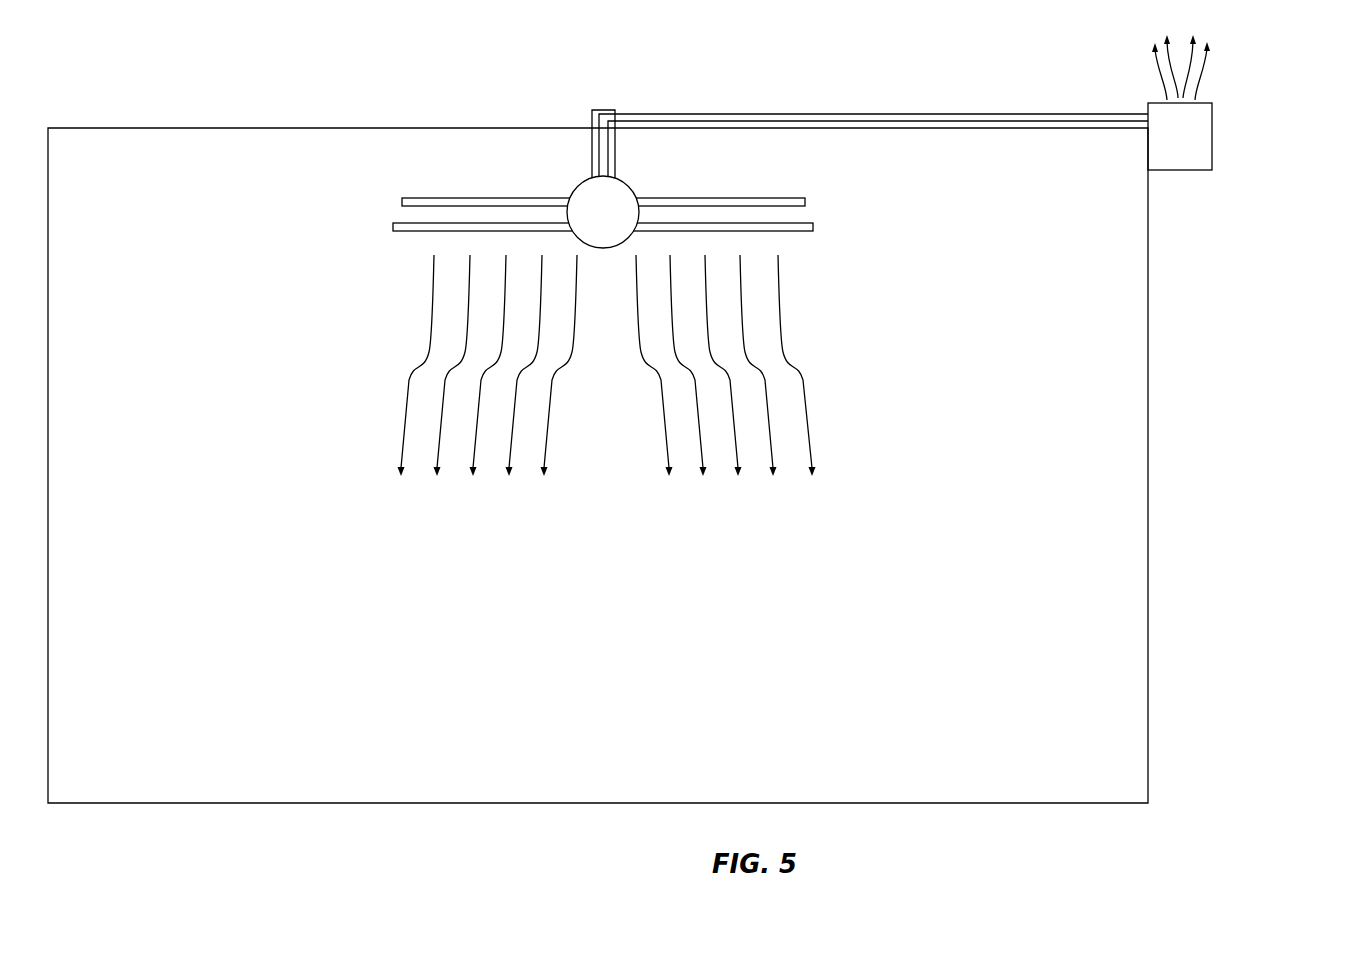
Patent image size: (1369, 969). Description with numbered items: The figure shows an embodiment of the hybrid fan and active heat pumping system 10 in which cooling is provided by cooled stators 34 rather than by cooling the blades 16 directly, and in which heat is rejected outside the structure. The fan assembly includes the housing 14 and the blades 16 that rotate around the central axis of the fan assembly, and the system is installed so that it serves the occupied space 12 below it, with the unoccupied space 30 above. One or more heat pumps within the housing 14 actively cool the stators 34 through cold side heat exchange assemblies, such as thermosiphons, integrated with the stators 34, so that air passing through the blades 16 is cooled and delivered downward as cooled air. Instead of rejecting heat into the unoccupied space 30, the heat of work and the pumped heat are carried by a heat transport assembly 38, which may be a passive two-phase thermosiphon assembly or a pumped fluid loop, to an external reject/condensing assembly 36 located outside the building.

The hybrid fan and active heat pumping system 10 is at (619, 193).
The occupied space 12 is at (222, 150).
The housing 14 is at (643, 210).
The blades 16 is at (415, 223).
The unoccupied space 30 is at (724, 62).
The cooled stators 34 is at (445, 198).
The external reject/condensing assembly 36 is at (1213, 137).
The heat transport assembly 38 is at (790, 113).